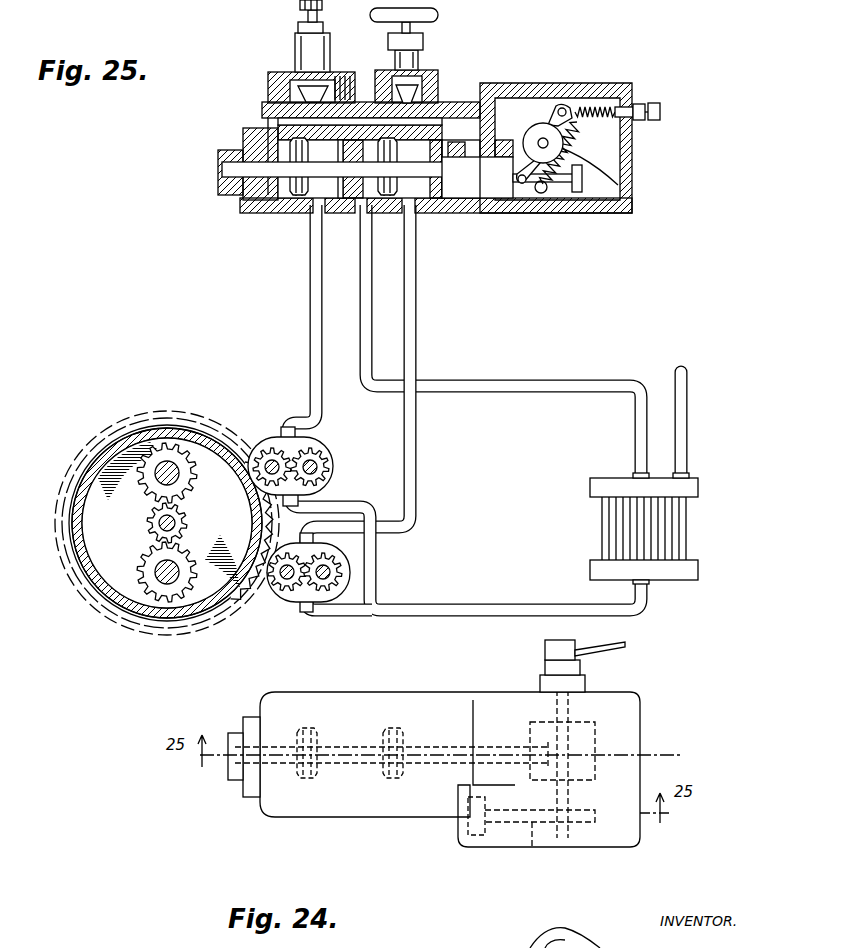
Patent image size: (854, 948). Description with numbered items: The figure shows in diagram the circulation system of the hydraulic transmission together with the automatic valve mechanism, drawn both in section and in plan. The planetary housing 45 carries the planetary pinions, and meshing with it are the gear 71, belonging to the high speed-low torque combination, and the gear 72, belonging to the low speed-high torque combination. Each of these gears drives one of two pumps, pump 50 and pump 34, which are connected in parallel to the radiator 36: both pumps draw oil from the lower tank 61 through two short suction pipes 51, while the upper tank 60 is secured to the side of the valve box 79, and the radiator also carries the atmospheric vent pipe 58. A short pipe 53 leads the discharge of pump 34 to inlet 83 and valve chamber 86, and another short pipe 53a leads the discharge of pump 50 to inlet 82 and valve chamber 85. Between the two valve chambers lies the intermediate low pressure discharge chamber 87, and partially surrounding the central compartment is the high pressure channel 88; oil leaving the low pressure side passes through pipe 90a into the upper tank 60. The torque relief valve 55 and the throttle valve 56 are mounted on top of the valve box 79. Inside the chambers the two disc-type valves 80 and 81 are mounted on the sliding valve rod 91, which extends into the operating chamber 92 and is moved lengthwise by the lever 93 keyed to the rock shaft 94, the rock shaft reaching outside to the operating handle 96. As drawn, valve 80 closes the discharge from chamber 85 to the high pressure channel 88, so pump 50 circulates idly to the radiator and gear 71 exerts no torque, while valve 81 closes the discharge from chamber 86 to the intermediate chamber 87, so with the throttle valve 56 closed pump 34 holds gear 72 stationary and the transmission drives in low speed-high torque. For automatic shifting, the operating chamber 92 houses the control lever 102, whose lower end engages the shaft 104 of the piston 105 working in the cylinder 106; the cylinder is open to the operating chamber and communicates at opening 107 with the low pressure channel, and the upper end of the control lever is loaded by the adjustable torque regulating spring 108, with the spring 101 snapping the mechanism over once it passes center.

In FIG. 25, the pump 34 is at (278, 602).
In FIG. 25, the radiator 36 is at (665, 528).
In FIG. 25, the planetary housing 45 is at (167, 527).
In FIG. 25, the pump 50 is at (335, 458).
In FIG. 25, the suction piping 51 is at (377, 567).
In FIG. 25, the discharge pipe 53 is at (418, 477).
In FIG. 25, the discharge pipe 53a is at (310, 320).
In FIG. 25, the torque relief valve 55 is at (297, 46).
In FIG. 25, the throttle valve 56 is at (438, 40).
In FIG. 25, the atmospheric vent pipe 58 is at (688, 430).
In FIG. 25, the upper tank 60 is at (699, 484).
In FIG. 25, the lower tank 61 is at (699, 566).
In FIG. 25, the gear 71 is at (236, 442).
In FIG. 25, the gear 72 is at (252, 605).
In FIG. 25, the valve box 79 is at (240, 226).
In FIG. 24, the valve box 79 is at (458, 690).
In FIG. 25, the valve 80 is at (290, 200).
In FIG. 24, the valve 80 is at (308, 780).
In FIG. 25, the valve 81 is at (386, 188).
In FIG. 24, the valve 81 is at (393, 780).
In FIG. 25, the inlet 82 is at (310, 226).
In FIG. 25, the inlet 83 is at (436, 195).
In FIG. 25, the valve chamber 85 is at (318, 188).
In FIG. 25, the valve chamber 86 is at (414, 190).
In FIG. 25, the intermediate low pressure discharge chamber 87 is at (356, 190).
In FIG. 25, the high pressure channel 88 is at (262, 110).
In FIG. 25, the pipe 90a is at (524, 392).
In FIG. 25, the sliding valve rod 91 is at (222, 156).
In FIG. 24, the sliding valve rod 91 is at (262, 804).
In FIG. 25, the operating chamber 92 is at (612, 148).
In FIG. 24, the lever 93 is at (590, 740).
In FIG. 25, the rock shaft 94 is at (540, 143).
In FIG. 24, the rock shaft 94 is at (562, 710).
In FIG. 24, the operating handle 96 is at (626, 642).
In FIG. 25, the spring 101 is at (618, 185).
In FIG. 25, the control lever 102 is at (545, 123).
In FIG. 25, the shaft 104 is at (560, 183).
In FIG. 24, the shaft 104 is at (536, 847).
In FIG. 25, the piston 105 is at (462, 184).
In FIG. 24, the piston 105 is at (477, 836).
In FIG. 25, the cylinder 106 is at (488, 180).
In FIG. 25, the opening 107 is at (452, 190).
In FIG. 25, the torque regulating spring 108 is at (600, 110).